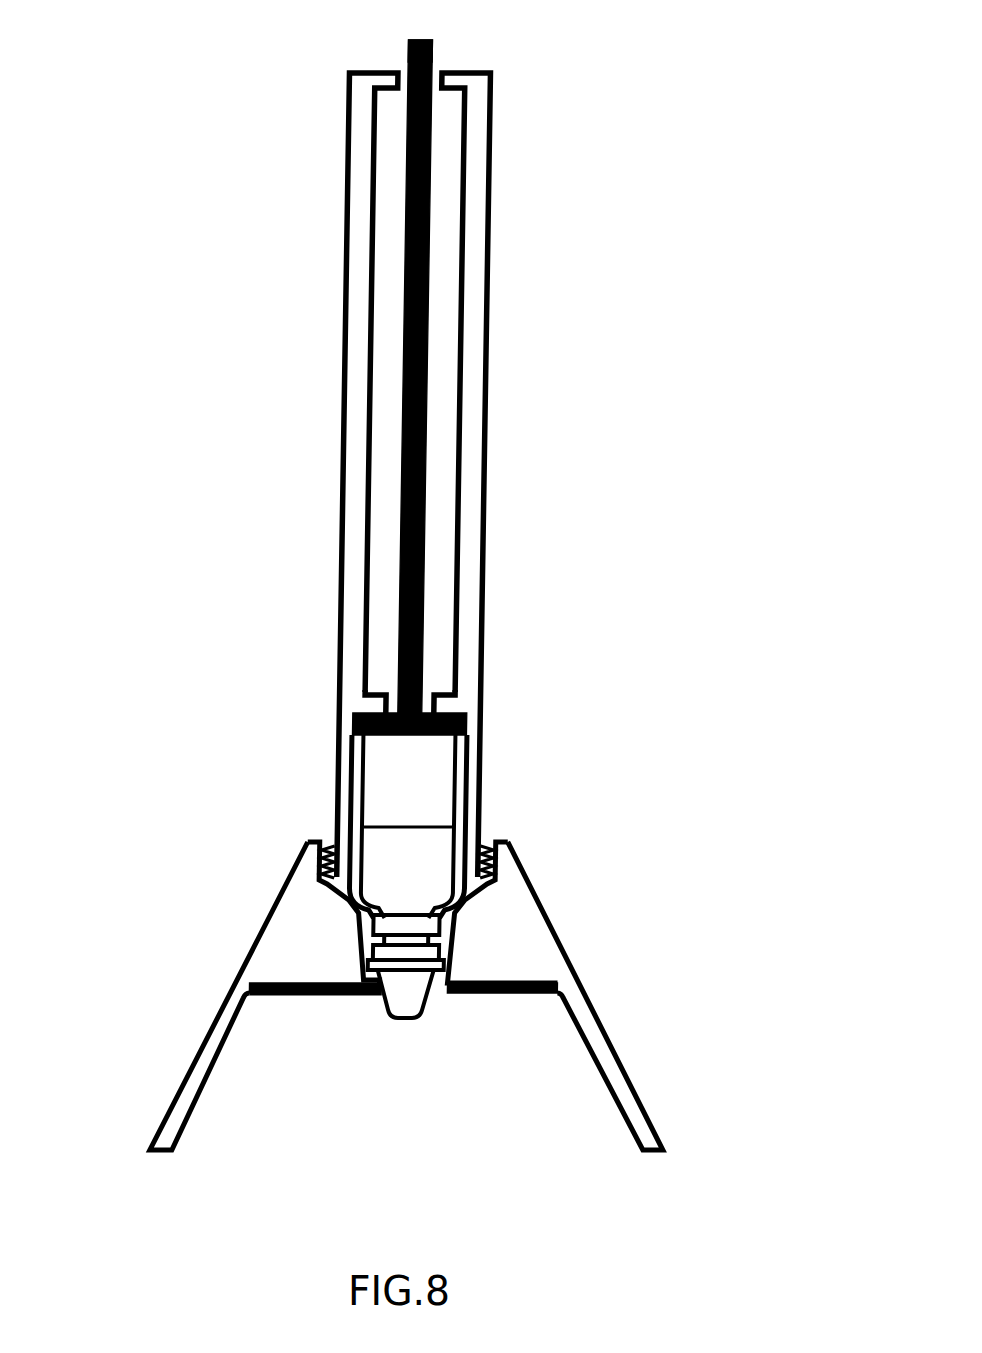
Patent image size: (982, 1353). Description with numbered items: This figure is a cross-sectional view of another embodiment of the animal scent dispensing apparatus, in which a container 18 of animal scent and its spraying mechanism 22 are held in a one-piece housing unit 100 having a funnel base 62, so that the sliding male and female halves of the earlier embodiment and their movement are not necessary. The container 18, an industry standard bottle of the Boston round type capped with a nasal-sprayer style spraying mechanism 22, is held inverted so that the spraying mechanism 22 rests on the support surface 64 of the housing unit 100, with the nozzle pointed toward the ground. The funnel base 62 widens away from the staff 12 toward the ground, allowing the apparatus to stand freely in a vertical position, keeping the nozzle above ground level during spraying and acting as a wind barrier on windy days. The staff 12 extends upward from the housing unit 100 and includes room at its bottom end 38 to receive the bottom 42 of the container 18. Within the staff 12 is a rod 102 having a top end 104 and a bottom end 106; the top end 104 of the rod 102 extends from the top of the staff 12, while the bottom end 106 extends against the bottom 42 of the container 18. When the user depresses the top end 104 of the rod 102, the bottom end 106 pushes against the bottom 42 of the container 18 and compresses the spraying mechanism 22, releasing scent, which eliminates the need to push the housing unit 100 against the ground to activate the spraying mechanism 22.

The staff 12 is at (478, 218).
The container 18 is at (442, 784).
The spraying mechanism 22 is at (436, 920).
The bottom end 38 is at (319, 823).
The bottom 42 is at (481, 719).
The funnel base 62 is at (637, 1068).
The support surface 64 is at (438, 1003).
The housing unit 100 is at (449, 966).
The rod 102 is at (444, 372).
The top end 104 is at (446, 59).
The bottom end 106 is at (347, 707).